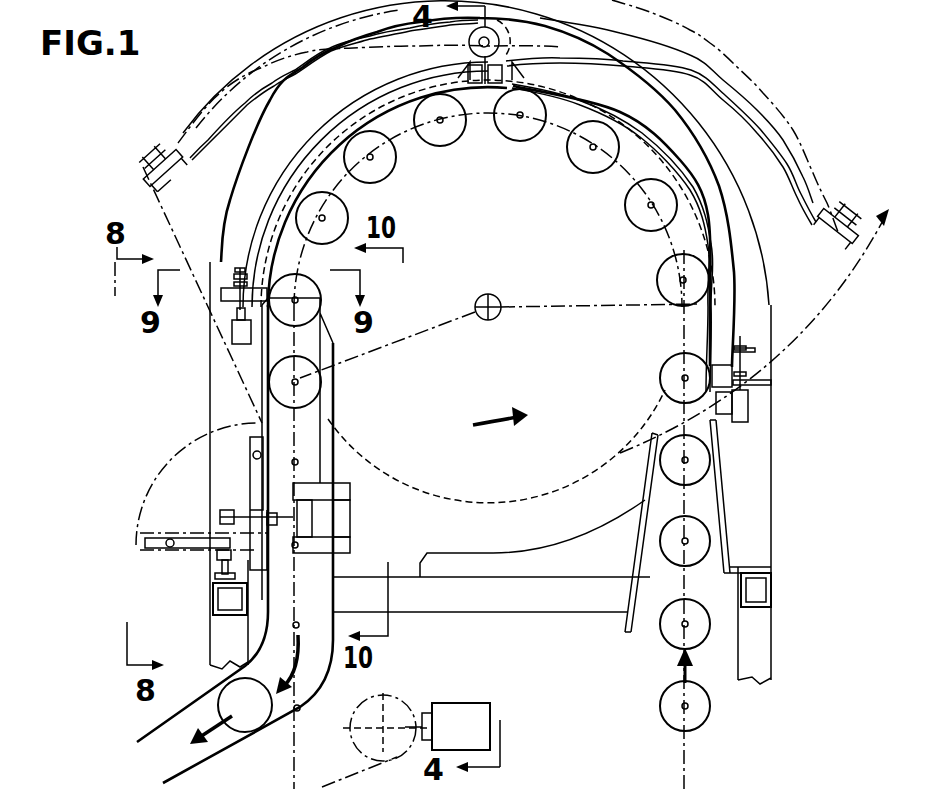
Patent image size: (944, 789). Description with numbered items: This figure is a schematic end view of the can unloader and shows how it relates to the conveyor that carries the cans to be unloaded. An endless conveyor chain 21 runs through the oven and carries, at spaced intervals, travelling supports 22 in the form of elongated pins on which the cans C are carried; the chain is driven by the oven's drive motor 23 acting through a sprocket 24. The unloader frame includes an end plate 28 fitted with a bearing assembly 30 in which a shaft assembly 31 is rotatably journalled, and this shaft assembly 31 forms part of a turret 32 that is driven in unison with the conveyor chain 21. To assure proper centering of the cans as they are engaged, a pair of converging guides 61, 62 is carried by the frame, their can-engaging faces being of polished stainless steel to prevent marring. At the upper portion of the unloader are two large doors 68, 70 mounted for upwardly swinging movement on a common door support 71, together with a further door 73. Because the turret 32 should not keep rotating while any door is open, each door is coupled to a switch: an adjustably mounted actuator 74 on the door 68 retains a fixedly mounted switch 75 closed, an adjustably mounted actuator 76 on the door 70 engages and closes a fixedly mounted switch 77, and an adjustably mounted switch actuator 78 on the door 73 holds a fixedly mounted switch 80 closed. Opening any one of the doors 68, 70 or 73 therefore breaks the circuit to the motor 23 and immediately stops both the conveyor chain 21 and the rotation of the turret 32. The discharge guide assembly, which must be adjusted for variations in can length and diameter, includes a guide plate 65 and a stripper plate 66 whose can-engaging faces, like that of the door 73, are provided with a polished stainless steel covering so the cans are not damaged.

The door 70 is at (214, 110).
The door support 71 is at (502, 38).
The door 68 is at (786, 139).
The actuator 74 is at (750, 362).
The switch 75 is at (750, 404).
The shaft assembly 31 is at (498, 298).
The turret 32 is at (455, 515).
The container C is at (440, 147).
The travelling supports 22 is at (684, 683).
The stripper plate 66 is at (335, 403).
The guide plate 65 is at (262, 370).
The actuator 76 is at (232, 292).
The switch 77 is at (232, 340).
The door 73 is at (258, 472).
The switch actuator 78 is at (240, 512).
The switch 80 is at (309, 542).
The converging guide 61 is at (640, 540).
The converging guide 62 is at (720, 493).
The conveyor chain 21 is at (293, 740).
The drive motor 23 is at (463, 702).
The sprocket 24 is at (400, 662).
The bearing assemblies 30 is at (584, 781).
The end plate 28 is at (744, 781).